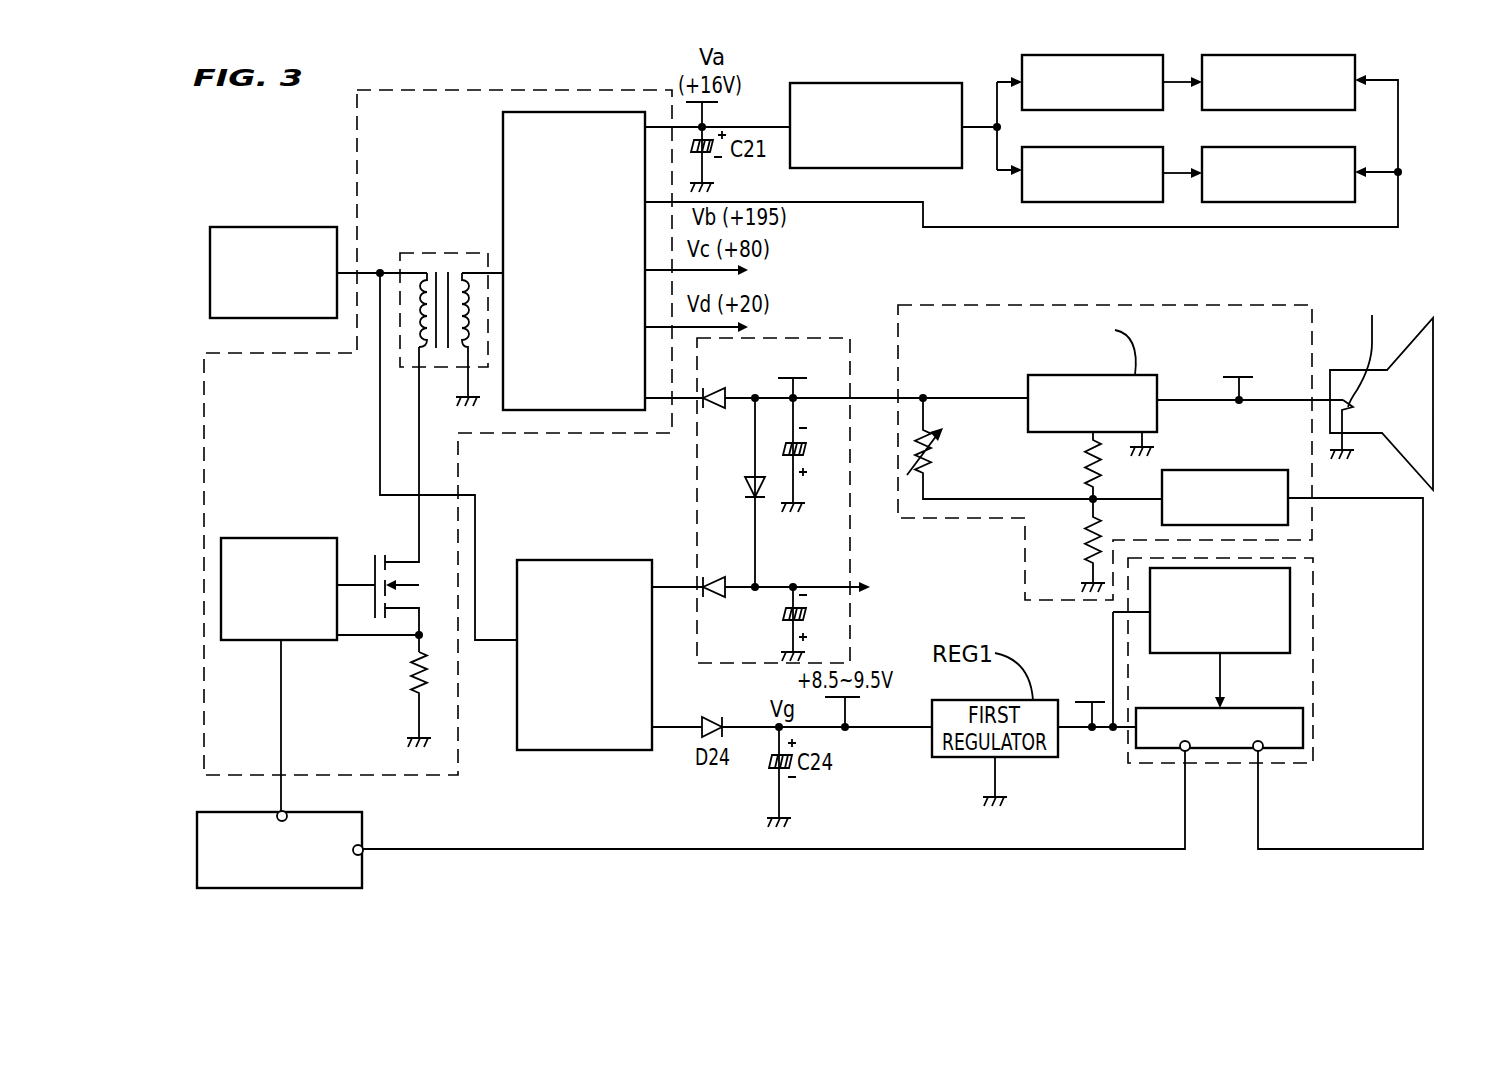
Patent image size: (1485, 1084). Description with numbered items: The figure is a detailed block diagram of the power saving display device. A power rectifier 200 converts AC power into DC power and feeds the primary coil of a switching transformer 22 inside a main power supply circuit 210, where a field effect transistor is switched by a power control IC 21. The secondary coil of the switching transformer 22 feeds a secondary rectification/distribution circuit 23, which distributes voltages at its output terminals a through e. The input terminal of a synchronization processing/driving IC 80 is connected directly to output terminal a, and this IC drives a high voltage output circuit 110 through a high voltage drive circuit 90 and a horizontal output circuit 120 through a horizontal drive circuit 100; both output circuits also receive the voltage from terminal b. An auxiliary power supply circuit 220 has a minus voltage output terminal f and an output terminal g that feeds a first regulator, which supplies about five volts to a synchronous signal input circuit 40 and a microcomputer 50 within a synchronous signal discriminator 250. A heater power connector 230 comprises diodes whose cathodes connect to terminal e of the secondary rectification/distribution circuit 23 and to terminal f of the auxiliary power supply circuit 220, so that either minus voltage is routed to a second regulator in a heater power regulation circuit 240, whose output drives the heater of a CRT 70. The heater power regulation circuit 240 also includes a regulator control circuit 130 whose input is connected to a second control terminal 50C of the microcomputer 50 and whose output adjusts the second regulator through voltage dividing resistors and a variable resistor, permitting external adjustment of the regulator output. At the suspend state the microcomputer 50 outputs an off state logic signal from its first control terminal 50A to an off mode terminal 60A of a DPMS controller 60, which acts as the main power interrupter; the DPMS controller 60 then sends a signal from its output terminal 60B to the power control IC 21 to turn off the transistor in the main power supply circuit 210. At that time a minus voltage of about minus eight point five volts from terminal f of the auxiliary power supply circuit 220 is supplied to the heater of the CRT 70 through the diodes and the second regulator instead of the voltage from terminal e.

The power control IC 21 is at (295, 538).
The switching transformer 22 is at (455, 250).
The secondary rectification/distribution circuit 23 is at (503, 132).
The synchronous signal input circuit 40 is at (1292, 568).
The microcomputer 50 is at (1303, 715).
The first control terminal 50A is at (1180, 742).
The second control terminal 50C is at (1262, 742).
The DPMS controller 60 is at (363, 822).
The off mode terminal 60A is at (363, 857).
The output terminal 60B is at (272, 820).
The CRT 70 is at (1433, 348).
The synchronization processing/driving IC 80 is at (847, 83).
The high voltage drive circuit 90 is at (1022, 66).
The horizontal drive circuit 100 is at (1100, 147).
The high voltage output circuit 110 is at (1358, 64).
The horizontal output circuit 120 is at (1257, 147).
The regulator control circuit 130 is at (1230, 470).
The power rectifier 200 is at (273, 227).
The main power supply circuit 210 is at (447, 90).
The auxiliary power supply circuit 220 is at (619, 560).
The heater power connector 230 is at (812, 337).
The heater power regulation circuit 240 is at (1005, 305).
The synchronous signal discriminator 250 is at (1313, 612).